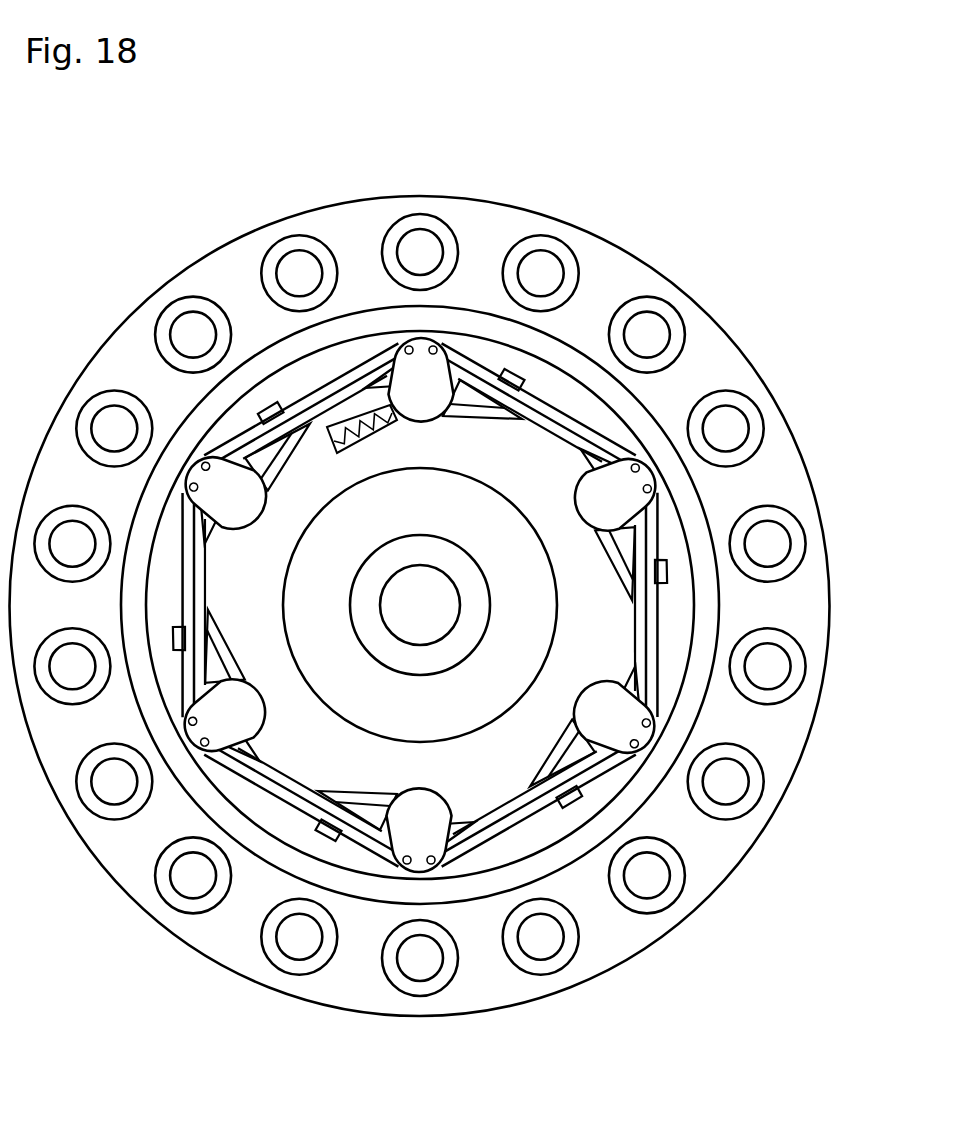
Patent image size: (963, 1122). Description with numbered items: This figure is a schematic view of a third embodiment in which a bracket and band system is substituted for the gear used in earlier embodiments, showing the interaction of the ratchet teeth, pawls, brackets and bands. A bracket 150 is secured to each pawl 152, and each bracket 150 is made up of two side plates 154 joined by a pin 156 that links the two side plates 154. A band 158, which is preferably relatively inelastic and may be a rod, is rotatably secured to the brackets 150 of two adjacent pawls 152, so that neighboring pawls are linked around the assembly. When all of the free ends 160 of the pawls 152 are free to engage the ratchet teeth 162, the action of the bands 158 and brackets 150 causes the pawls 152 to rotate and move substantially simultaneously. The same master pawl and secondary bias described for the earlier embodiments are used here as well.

The bracket 150 is at (657, 474).
The pawl 152 is at (640, 523).
The side plates 154 is at (647, 463).
The pin 156 is at (653, 482).
The band 158 is at (557, 413).
The free ends 160 is at (520, 377).
The ratchet teeth 162 is at (373, 383).